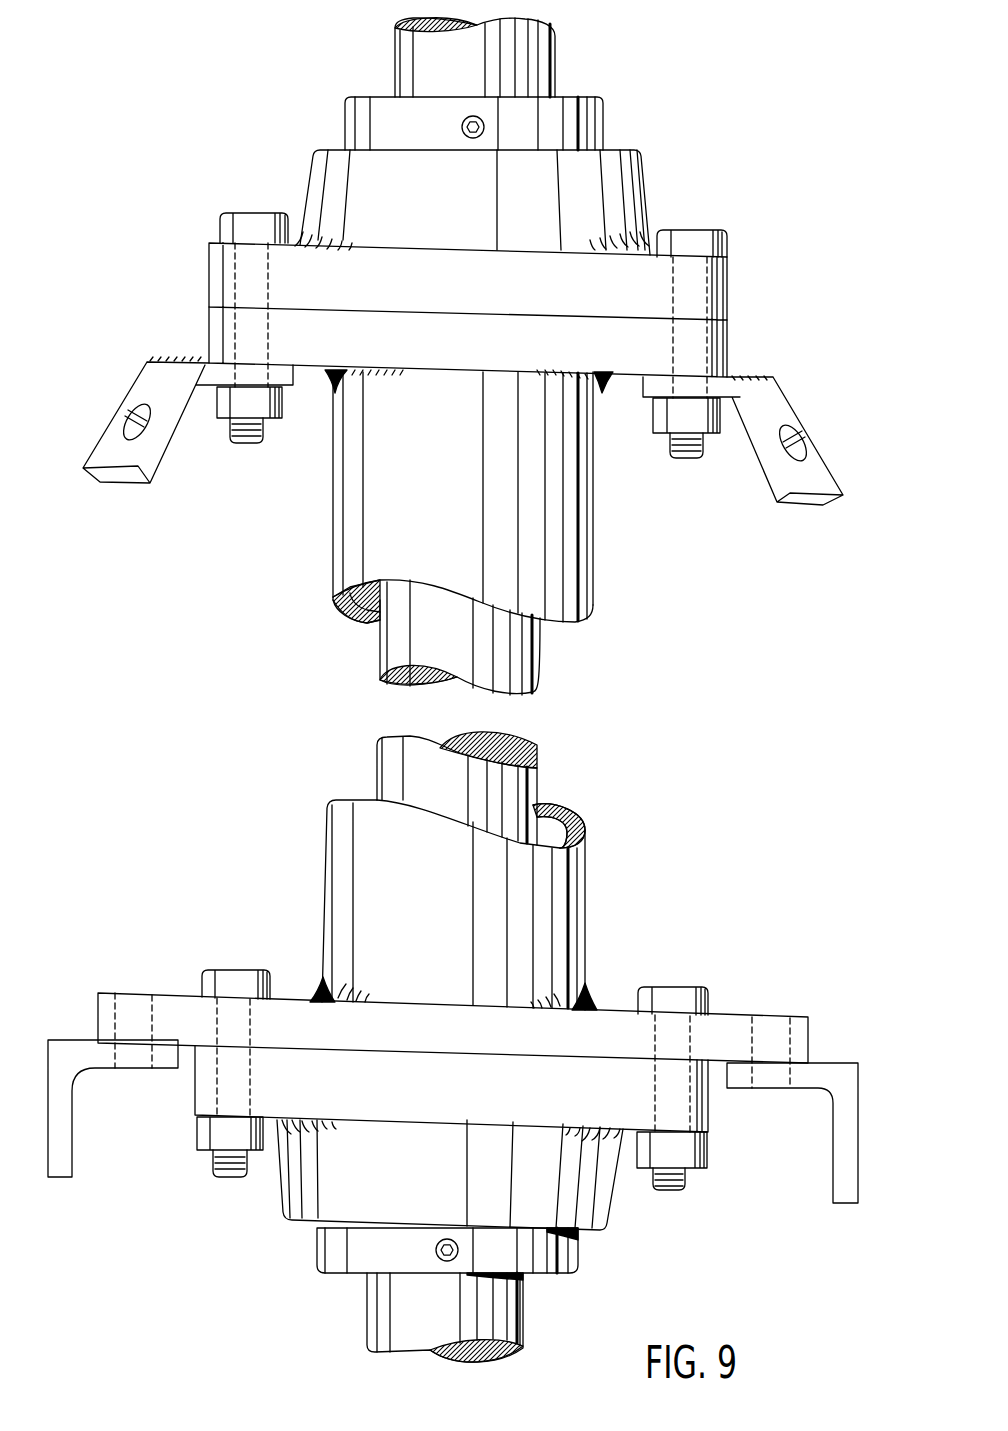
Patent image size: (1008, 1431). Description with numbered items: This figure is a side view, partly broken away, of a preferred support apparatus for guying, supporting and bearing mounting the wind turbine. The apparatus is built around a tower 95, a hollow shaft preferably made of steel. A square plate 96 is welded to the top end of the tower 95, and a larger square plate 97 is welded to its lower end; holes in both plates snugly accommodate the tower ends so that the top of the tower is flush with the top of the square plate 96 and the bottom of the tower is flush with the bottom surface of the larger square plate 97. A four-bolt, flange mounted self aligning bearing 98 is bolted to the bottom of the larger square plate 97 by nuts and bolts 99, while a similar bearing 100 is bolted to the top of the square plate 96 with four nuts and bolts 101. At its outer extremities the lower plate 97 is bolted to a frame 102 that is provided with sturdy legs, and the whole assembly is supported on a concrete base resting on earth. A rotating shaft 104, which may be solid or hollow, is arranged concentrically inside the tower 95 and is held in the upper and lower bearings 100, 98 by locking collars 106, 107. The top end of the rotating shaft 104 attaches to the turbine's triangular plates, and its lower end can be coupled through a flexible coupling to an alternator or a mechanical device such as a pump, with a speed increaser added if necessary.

The tower 95 is at (567, 568).
The square plate 96 is at (692, 355).
The larger square plate 97 is at (725, 1025).
The flange mounted self aligning bearing 98 is at (603, 1178).
The nuts and bolts 99 is at (668, 983).
The bearing 100 is at (698, 295).
The nuts and bolts 101 is at (693, 240).
The frame 102 is at (843, 1113).
The rotating shaft 104 is at (513, 663).
The locking collar 106 is at (595, 133).
The locking collar 107 is at (563, 1255).